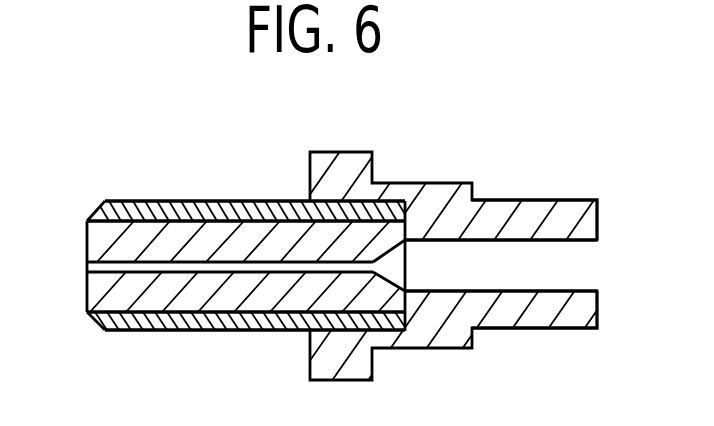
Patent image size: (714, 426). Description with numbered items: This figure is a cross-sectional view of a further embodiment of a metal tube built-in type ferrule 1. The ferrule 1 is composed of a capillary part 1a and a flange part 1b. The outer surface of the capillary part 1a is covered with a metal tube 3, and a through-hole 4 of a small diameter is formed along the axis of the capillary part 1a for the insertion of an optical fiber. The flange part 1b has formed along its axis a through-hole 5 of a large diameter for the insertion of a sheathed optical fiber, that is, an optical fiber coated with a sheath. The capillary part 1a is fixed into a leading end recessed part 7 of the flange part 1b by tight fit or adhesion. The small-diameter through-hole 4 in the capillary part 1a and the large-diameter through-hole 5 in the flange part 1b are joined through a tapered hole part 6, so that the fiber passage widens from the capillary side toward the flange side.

The ferrule 1 is at (432, 176).
The capillary part 1a is at (100, 204).
The flange part 1b is at (528, 200).
The metal tube 3 is at (228, 201).
The through-hole of a small diameter 4 is at (97, 266).
The through-hole of a large diameter 5 is at (563, 290).
The tapered hole part 6 is at (392, 272).
The leading end recessed part 7 is at (394, 204).